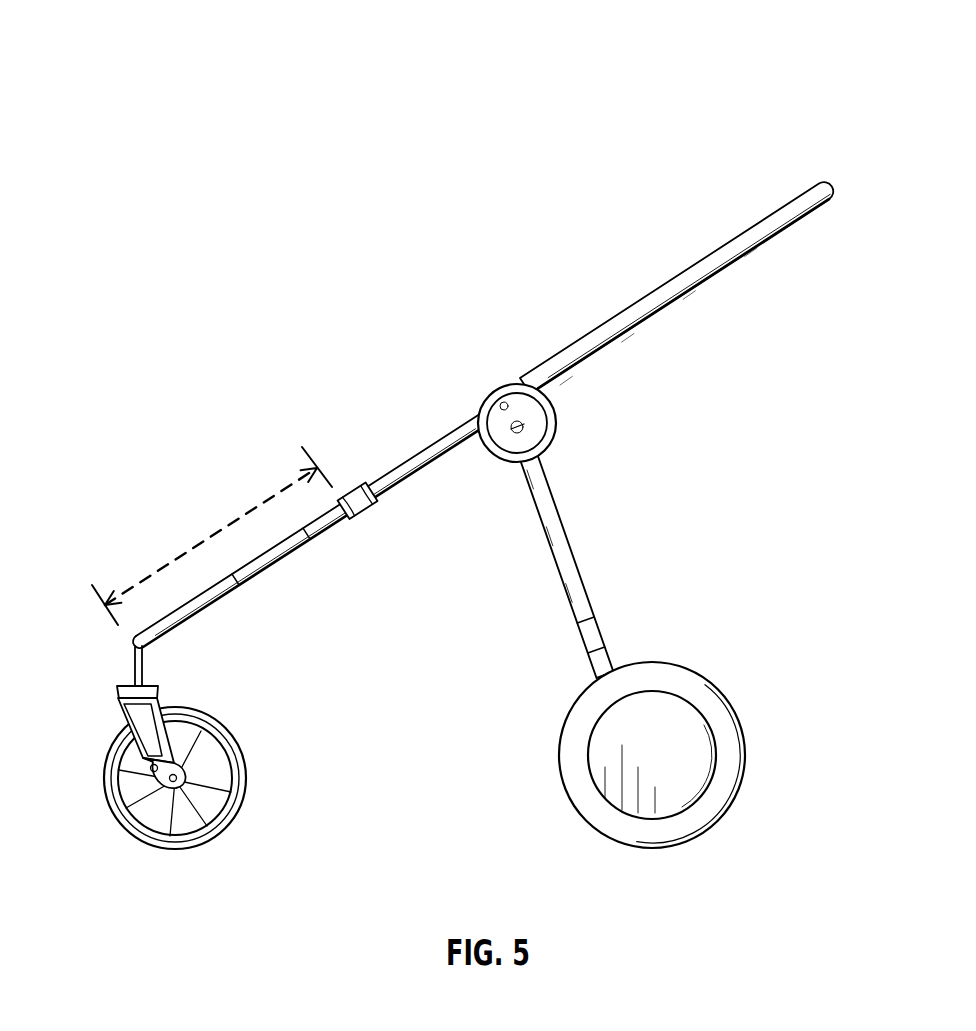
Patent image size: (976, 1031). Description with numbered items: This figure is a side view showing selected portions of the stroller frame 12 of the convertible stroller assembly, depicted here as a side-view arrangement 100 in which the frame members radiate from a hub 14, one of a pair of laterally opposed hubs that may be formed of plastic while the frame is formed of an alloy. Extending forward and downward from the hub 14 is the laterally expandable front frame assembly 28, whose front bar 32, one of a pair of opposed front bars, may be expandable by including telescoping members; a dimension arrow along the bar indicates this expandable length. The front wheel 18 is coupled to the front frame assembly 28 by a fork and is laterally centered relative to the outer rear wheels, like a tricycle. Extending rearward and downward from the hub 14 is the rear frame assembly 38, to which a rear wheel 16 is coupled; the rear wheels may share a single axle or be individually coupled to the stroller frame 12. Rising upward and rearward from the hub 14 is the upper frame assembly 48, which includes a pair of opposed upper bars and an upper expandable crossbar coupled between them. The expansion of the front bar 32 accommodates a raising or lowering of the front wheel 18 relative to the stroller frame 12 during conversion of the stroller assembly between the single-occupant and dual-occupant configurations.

The stroller 100 is at (137, 68).
The stroller frame 12 is at (685, 293).
The hub 14 is at (553, 412).
The rear wheel 16 is at (740, 718).
The front wheel 18 is at (246, 778).
The front frame assembly 28 is at (227, 882).
The front bar 32 is at (257, 558).
The rear frame assembly 38 is at (516, 454).
The upper frame assembly 48 is at (820, 175).